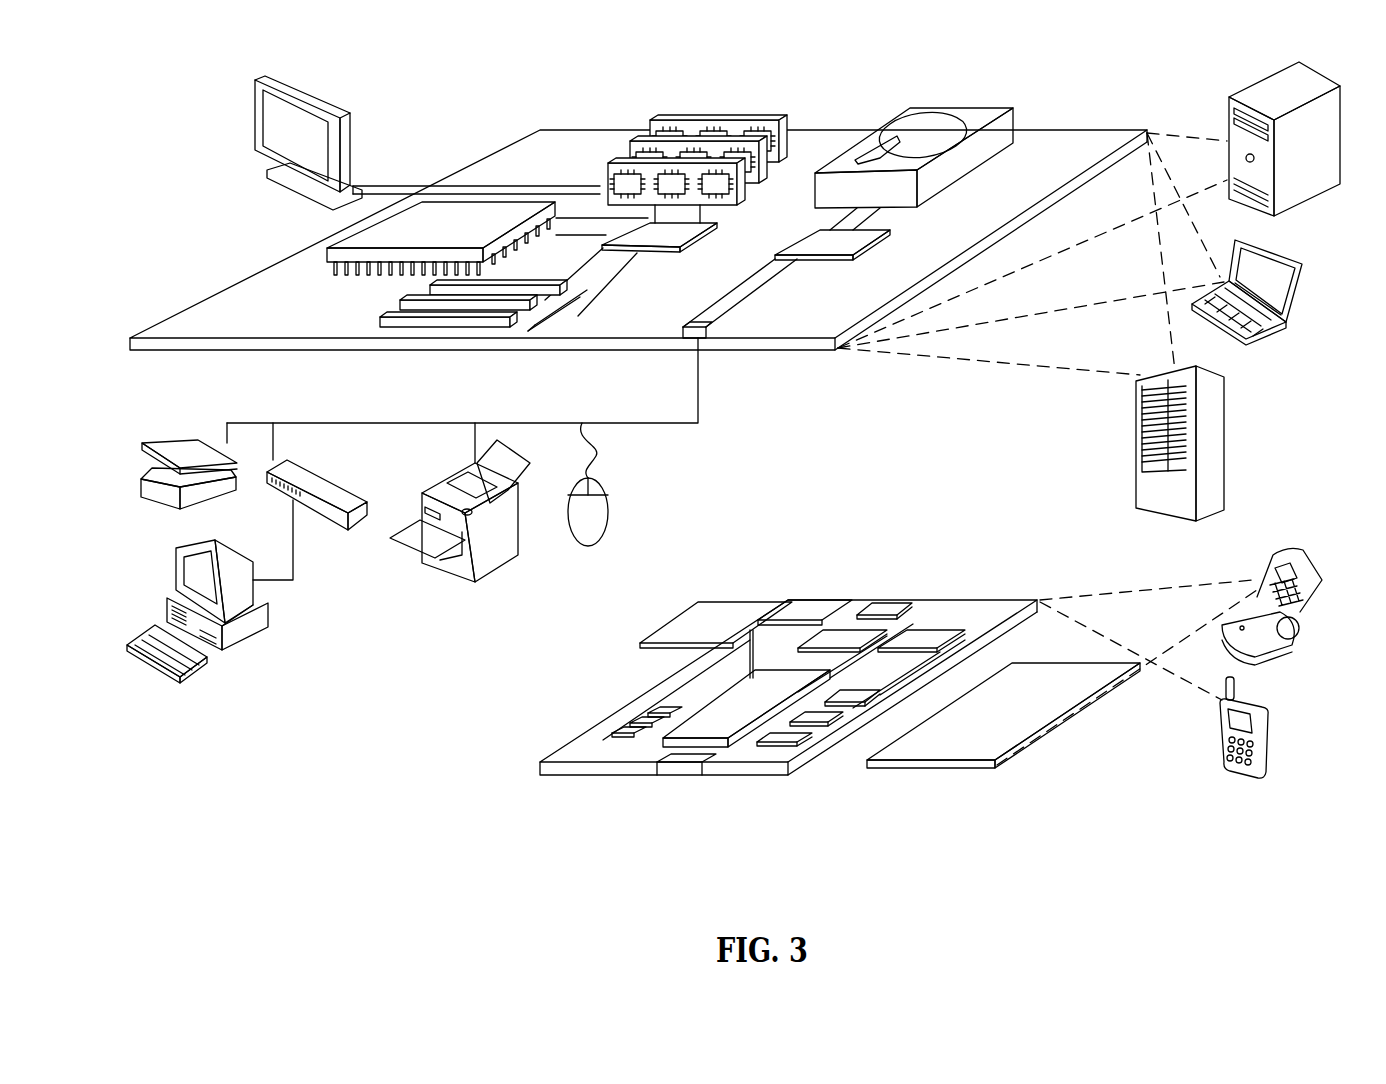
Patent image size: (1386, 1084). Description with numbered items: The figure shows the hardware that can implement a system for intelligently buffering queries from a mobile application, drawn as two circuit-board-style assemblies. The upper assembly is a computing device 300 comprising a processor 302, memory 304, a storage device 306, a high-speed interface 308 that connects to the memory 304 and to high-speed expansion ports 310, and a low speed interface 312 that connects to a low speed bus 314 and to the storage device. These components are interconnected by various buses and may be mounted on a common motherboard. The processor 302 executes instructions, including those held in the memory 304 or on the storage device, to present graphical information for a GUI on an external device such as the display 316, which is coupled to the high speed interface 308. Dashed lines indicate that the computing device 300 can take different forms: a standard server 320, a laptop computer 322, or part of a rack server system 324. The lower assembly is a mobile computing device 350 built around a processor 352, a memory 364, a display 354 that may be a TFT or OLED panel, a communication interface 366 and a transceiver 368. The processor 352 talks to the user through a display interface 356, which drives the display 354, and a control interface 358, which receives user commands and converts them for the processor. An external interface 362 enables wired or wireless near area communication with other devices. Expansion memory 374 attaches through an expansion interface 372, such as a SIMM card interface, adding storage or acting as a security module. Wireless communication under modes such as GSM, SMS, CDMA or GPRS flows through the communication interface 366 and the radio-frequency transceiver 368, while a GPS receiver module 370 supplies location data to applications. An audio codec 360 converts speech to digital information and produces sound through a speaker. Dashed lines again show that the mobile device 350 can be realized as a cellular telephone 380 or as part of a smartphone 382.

The computing device 300 is at (454, 96).
The processor 302 is at (327, 250).
The memory 304 is at (705, 122).
The hard disk drive storage 306 is at (908, 108).
The high-speed interface 308 is at (633, 232).
The high-speed expansion ports 310 is at (397, 320).
The low speed interface 312 is at (813, 240).
The low speed bus 314 is at (710, 339).
The display 316 is at (267, 80).
The standard server 320 is at (1231, 116).
The laptop computer 322 is at (1248, 339).
The rack server system 324 is at (1136, 471).
The computing device 350 is at (512, 778).
The processor 352 is at (720, 730).
The display 354 is at (960, 748).
The display interface 356 is at (788, 738).
The control interface 358 is at (820, 717).
The audio codec 360 is at (850, 693).
The external interface 362 is at (687, 767).
The memory 364 is at (633, 720).
The communication interface 366 is at (835, 635).
The transceiver 368 is at (917, 635).
The GPS receiver module 370 is at (892, 603).
The expansion interface 372 is at (760, 620).
The expansion memory 374 is at (683, 613).
The cellular telephone 380 is at (1283, 557).
The smartphone 382 is at (1218, 735).